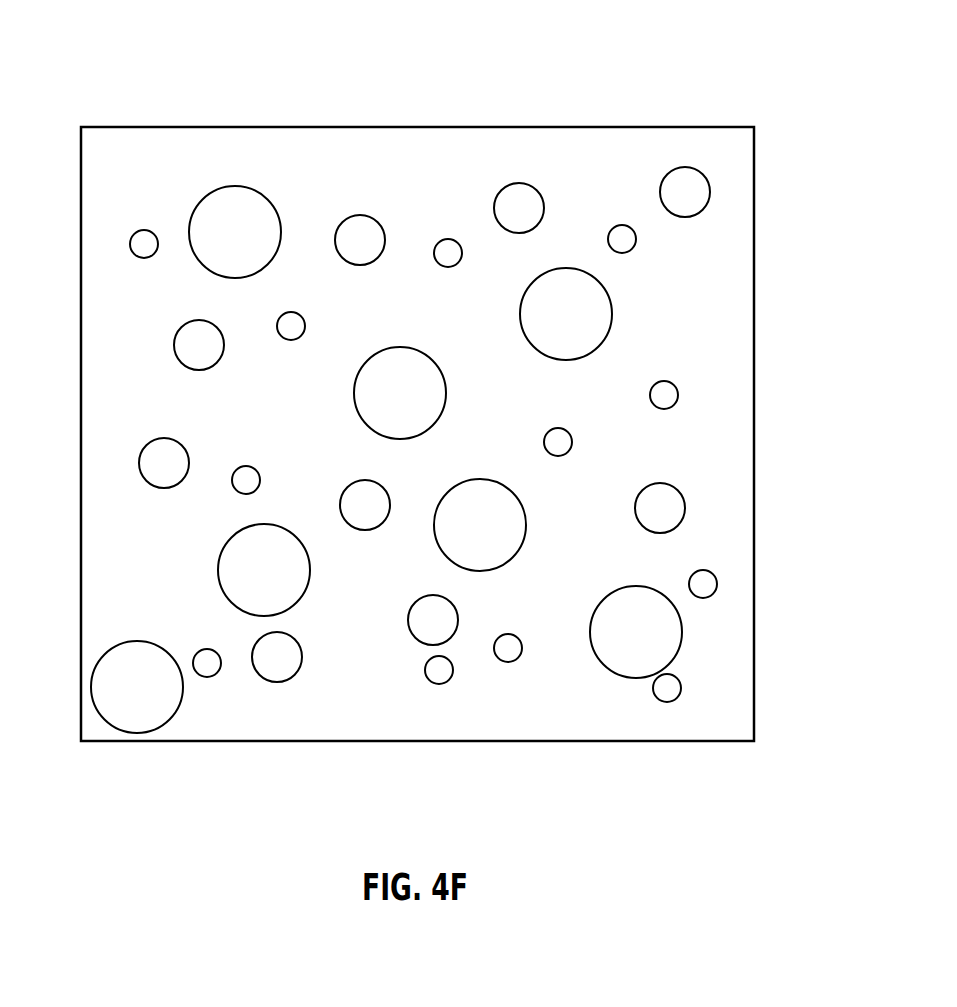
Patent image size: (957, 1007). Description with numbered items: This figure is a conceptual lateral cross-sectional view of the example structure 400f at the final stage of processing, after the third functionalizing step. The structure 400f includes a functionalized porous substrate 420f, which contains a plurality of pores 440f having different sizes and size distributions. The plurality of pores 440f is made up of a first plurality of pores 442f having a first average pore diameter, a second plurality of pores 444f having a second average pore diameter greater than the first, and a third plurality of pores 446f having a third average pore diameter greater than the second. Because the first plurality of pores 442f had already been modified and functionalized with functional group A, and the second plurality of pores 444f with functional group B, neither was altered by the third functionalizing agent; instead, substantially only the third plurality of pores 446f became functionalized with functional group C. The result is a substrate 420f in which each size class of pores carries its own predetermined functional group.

The structure 400f is at (404, 425).
The functionalized porous substrate 420f is at (399, 404).
The plurality of pores 440f is at (325, 147).
The first plurality of pores 442f is at (485, 726).
The second plurality of pores 444f is at (316, 713).
The third plurality of pores 446f is at (175, 741).